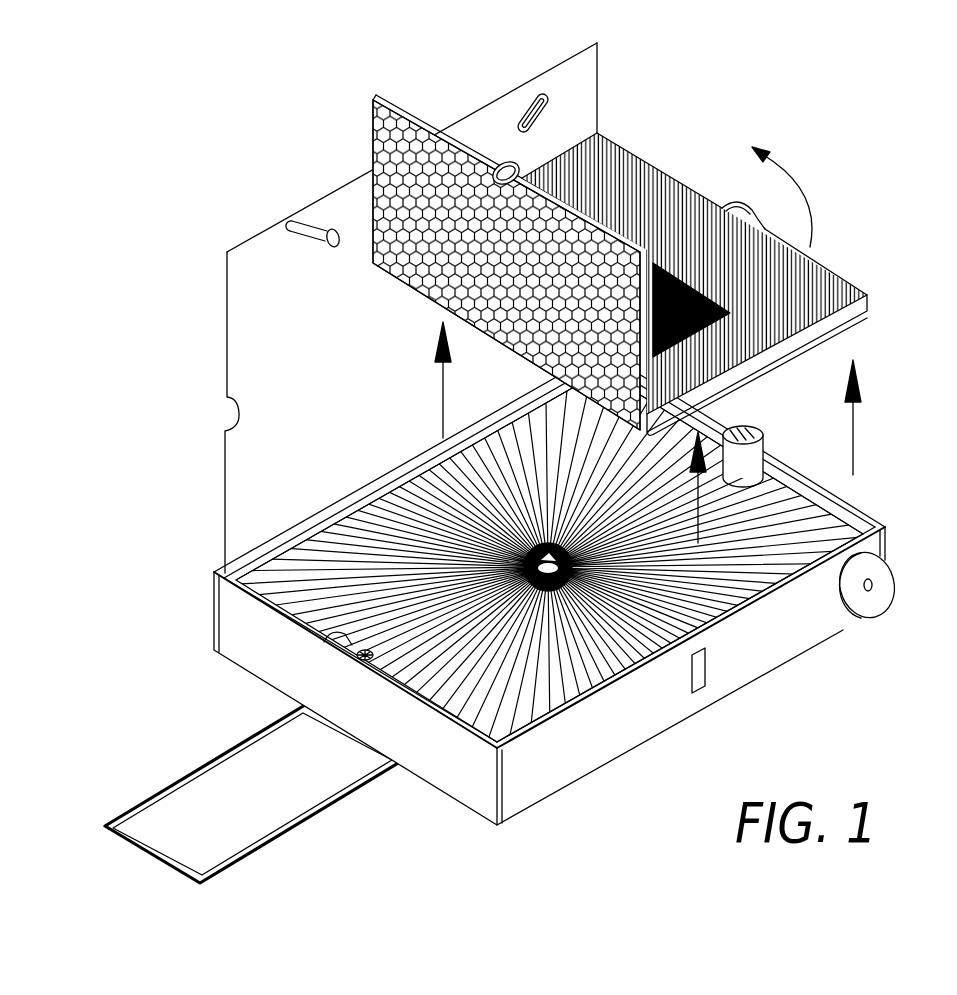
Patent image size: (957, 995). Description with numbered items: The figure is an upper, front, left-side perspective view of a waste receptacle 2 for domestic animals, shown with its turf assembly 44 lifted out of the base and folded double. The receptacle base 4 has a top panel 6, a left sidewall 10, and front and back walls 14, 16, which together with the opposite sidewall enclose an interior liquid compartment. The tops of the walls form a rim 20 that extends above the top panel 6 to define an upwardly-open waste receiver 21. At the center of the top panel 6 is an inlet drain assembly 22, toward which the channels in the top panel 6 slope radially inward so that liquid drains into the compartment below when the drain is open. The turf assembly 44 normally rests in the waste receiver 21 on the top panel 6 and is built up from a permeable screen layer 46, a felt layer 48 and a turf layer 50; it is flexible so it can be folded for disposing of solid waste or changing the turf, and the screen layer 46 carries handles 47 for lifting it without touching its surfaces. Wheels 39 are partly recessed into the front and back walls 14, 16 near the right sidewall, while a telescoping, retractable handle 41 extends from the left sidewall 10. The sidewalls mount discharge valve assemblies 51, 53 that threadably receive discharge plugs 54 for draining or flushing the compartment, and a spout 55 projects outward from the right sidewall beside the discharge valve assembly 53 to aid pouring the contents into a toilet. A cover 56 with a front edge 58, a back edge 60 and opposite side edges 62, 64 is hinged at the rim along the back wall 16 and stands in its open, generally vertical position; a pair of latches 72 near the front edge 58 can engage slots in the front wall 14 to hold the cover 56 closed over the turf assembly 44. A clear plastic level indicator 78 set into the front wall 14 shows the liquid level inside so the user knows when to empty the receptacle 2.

The waste receptacle 2 is at (722, 97).
The receptacle base 4 is at (888, 520).
The top panel 6 is at (770, 503).
The sidewall 10 is at (438, 761).
The front wall 14 is at (610, 721).
The back wall 16 is at (353, 512).
The rim 20 is at (860, 500).
The waste receiver 21 is at (310, 562).
The inlet drain assembly 22 is at (527, 547).
The wheels 39 is at (861, 615).
The telescoping, retractable handle 41 is at (180, 780).
The turf assembly 44 is at (709, 243).
The screen layer 46 is at (592, 241).
The handles 47 is at (505, 160).
The felt layer 48 is at (375, 98).
The turf layer 50 is at (390, 92).
The discharge valve assembly 51 is at (322, 642).
The discharge valve assembly 53 is at (771, 439).
The discharge plugs 54 is at (366, 664).
The spout 55 is at (750, 428).
The cover 56 is at (420, 307).
The front edge 58 is at (258, 234).
The back edge 60 is at (393, 483).
The side edge 62 is at (224, 482).
The side edge 64 is at (599, 60).
The latches 72 is at (297, 224).
The level indicator 78 is at (706, 668).